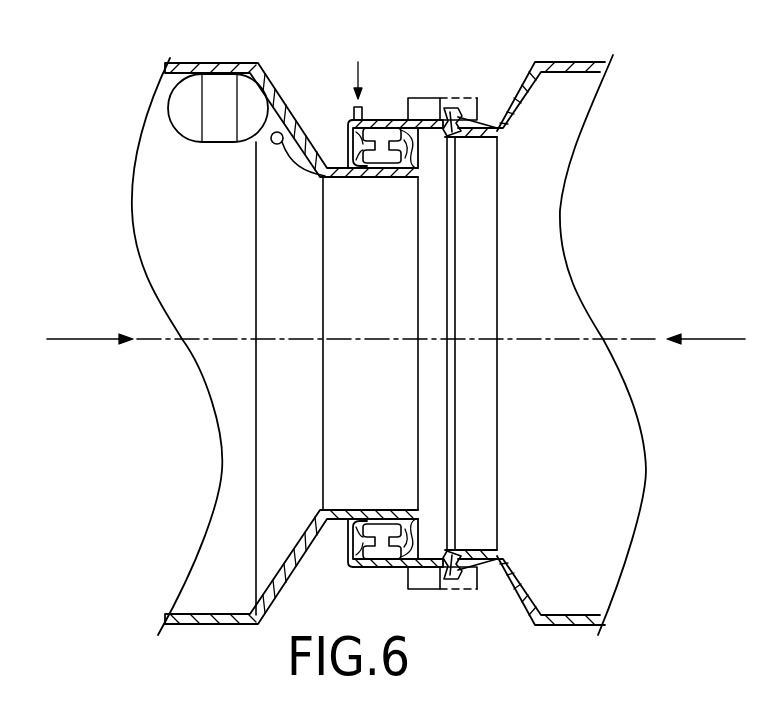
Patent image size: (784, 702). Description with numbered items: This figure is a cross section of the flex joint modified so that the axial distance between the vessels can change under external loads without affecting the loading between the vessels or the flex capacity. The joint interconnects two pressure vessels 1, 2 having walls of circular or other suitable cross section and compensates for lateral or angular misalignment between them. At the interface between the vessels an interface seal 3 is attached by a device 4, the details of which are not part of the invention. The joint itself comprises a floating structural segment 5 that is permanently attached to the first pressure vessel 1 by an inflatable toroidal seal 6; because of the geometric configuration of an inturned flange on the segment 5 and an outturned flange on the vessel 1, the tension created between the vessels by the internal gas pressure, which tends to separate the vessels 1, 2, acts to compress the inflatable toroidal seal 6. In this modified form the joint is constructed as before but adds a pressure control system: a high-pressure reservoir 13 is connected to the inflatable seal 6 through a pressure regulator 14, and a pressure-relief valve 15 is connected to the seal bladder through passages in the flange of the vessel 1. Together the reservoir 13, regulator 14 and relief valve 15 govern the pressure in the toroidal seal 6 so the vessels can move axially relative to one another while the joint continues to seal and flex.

The pressure vessel 1 is at (218, 63).
The pressure vessel 2 is at (566, 62).
The interface seal 3 is at (456, 110).
The device 4 is at (436, 98).
The floating structural segment 5 is at (418, 98).
The inflatable toroidal seal 6 is at (380, 118).
The high-pressure reservoir 13 is at (173, 65).
The pressure regulator 14 is at (273, 144).
The pressure-relief valve 15 is at (350, 116).